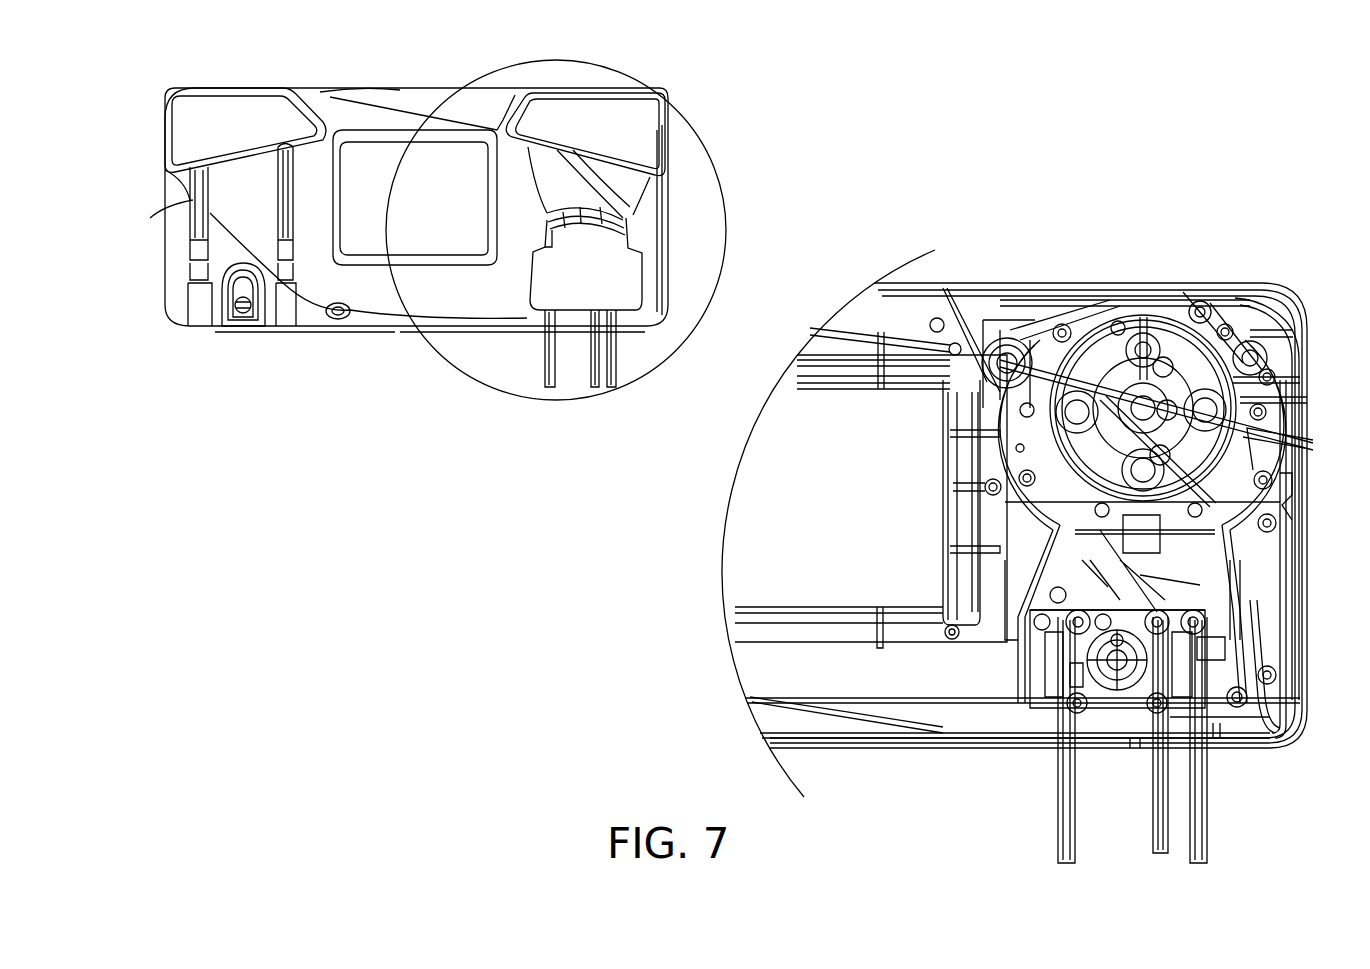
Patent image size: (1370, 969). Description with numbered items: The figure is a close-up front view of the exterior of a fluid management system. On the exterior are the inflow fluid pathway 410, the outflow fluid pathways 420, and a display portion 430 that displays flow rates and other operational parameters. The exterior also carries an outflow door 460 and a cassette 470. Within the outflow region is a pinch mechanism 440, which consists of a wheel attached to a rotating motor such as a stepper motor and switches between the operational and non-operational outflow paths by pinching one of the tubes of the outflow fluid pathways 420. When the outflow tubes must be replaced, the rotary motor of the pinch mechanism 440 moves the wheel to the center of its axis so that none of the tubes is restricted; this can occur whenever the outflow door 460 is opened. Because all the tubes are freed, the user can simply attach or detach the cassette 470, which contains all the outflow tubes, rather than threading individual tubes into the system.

The inflow fluid pathway 410 is at (180, 200).
The outflow fluid pathways 420 is at (548, 388).
The display portion 430 is at (363, 237).
The pinch mechanism 440 is at (1083, 657).
The outflow door 460 is at (628, 112).
The cassette 470 is at (610, 240).